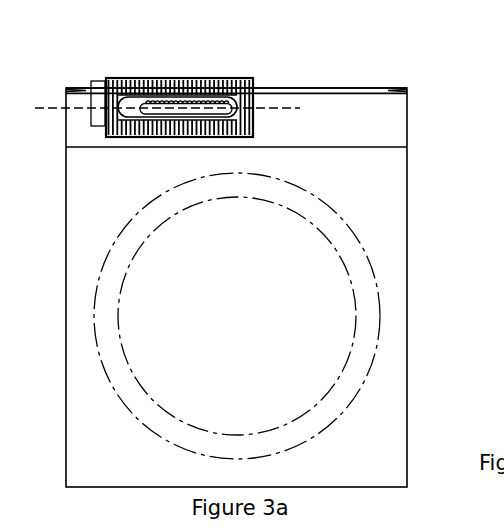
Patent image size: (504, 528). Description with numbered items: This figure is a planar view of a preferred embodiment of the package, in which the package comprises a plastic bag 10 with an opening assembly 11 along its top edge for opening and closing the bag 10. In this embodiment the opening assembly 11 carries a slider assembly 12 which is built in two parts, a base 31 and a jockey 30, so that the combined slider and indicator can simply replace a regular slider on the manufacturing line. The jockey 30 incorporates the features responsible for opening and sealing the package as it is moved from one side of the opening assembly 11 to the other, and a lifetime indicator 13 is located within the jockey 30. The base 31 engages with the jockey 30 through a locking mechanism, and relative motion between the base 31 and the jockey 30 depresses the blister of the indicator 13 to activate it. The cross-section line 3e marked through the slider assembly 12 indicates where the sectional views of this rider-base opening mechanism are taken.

The plastic bag 10 is at (386, 225).
The opening assembly 11 is at (391, 120).
The slider assembly 12 is at (163, 63).
The lifetime indicator 13 is at (253, 99).
The jockey 30 is at (220, 60).
The base 31 is at (85, 63).
The cross-section line 3e is at (45, 137).